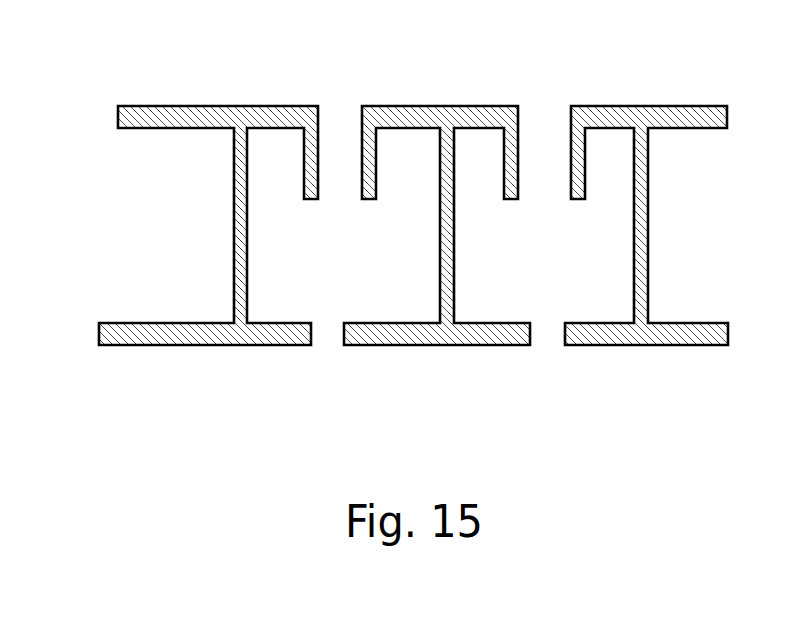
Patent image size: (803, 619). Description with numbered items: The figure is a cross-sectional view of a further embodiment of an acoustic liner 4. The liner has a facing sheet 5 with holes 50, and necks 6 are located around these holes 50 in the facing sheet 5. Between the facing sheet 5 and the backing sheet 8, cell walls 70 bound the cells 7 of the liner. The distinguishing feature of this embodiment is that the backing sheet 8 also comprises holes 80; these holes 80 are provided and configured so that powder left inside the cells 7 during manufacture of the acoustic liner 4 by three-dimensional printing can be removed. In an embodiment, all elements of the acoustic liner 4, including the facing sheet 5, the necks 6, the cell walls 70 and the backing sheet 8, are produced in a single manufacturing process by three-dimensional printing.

The acoustic liner 4 is at (106, 196).
The facing sheet 5 is at (673, 107).
The holes 50 is at (540, 130).
The necks 6 is at (361, 140).
The cells 7 is at (353, 289).
The cell walls 70 is at (448, 243).
The backing sheet 8 is at (430, 343).
The holes 80 is at (324, 340).